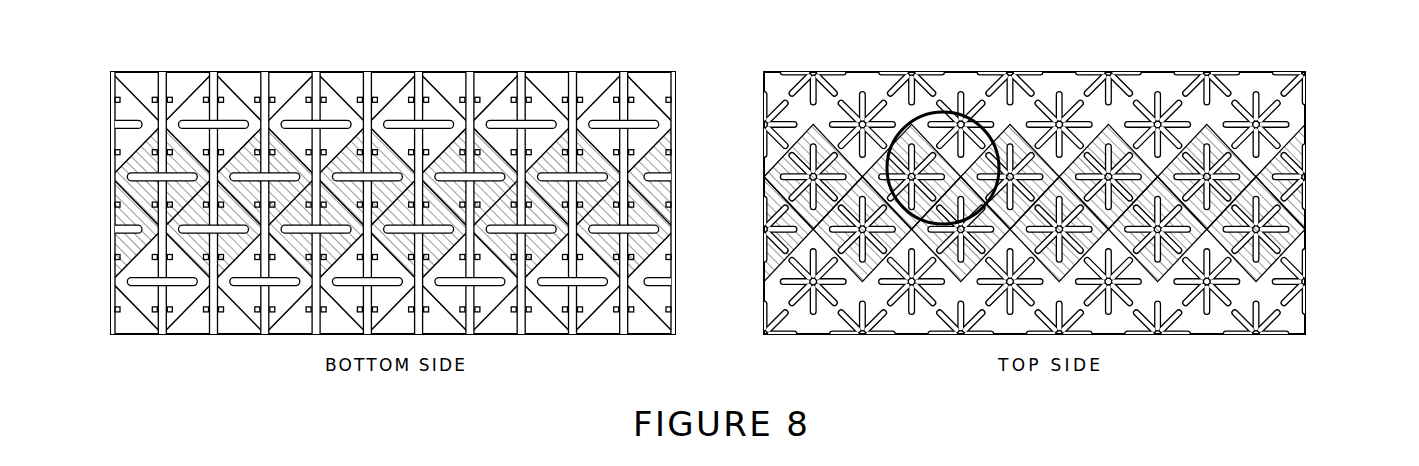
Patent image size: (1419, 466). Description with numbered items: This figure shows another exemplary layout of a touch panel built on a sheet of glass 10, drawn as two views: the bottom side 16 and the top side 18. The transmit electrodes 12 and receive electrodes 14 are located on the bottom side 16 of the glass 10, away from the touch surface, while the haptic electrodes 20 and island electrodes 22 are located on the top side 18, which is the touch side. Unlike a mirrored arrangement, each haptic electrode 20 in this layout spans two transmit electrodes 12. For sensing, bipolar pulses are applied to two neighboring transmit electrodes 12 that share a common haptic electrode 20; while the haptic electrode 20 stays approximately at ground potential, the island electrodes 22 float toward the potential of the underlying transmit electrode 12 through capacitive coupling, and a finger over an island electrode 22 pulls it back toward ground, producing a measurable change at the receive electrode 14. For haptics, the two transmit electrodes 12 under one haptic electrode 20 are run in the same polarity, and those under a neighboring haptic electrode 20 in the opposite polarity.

The glass 10 is at (136, 42).
The transmit (Tx) electrode 12 is at (131, 240).
The receive (Rx) electrode 14 is at (182, 124).
The bottom side 16 is at (633, 337).
The top side (touch side) 18 is at (1241, 337).
The haptic (Hx) electrode 20 is at (1292, 223).
The island (Is) electrode 22 is at (1270, 127).